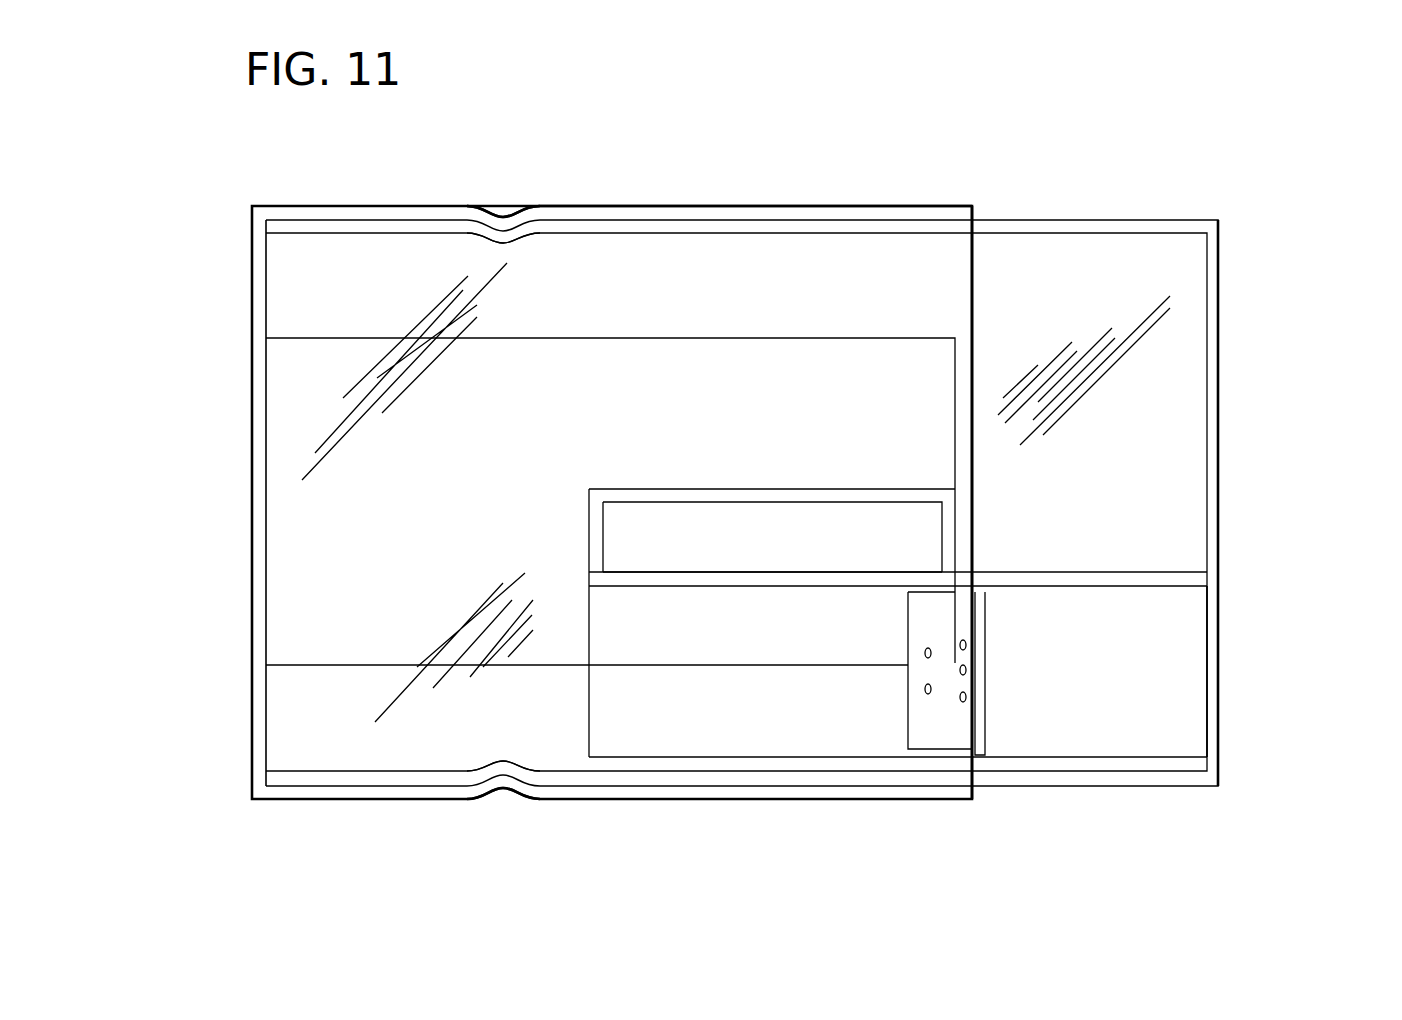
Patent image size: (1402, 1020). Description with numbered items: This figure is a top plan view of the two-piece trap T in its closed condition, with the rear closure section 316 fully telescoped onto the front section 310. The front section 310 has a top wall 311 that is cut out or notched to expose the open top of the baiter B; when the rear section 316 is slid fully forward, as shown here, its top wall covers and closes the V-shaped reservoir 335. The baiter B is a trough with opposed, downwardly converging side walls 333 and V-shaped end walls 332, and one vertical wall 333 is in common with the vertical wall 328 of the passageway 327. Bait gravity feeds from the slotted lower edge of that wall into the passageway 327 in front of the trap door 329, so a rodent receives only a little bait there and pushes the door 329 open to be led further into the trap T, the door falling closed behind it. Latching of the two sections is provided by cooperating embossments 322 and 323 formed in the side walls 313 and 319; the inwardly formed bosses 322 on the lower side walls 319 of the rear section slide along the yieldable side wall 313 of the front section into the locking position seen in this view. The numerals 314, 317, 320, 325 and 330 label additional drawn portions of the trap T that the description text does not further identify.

The front section 310 is at (1220, 352).
The top wall 311 is at (1055, 278).
The side wall 313 is at (712, 220).
The right edge wall 314 is at (1220, 240).
The rear closure section 316 is at (563, 204).
The left inner wall 317 is at (320, 618).
The lower side wall 319 is at (870, 208).
The housing 320 is at (252, 456).
The embossment 322 is at (518, 212).
The embossment 323 is at (520, 243).
The compartment 325 is at (1210, 686).
The passageway 327 is at (1145, 711).
The vertical wall 328 is at (1175, 572).
The trap door 329 is at (909, 612).
The connector base 330 is at (920, 690).
The end wall 332 is at (589, 548).
The side wall 333 is at (710, 489).
The reservoir 335 is at (832, 532).
The trap T is at (992, 187).
The baiter B is at (790, 470).